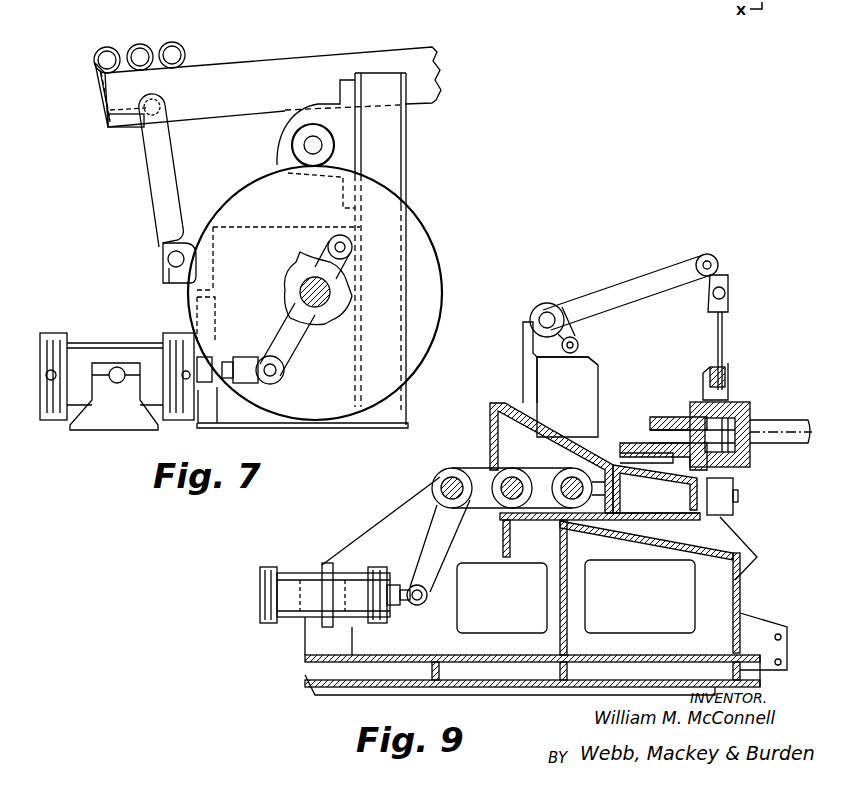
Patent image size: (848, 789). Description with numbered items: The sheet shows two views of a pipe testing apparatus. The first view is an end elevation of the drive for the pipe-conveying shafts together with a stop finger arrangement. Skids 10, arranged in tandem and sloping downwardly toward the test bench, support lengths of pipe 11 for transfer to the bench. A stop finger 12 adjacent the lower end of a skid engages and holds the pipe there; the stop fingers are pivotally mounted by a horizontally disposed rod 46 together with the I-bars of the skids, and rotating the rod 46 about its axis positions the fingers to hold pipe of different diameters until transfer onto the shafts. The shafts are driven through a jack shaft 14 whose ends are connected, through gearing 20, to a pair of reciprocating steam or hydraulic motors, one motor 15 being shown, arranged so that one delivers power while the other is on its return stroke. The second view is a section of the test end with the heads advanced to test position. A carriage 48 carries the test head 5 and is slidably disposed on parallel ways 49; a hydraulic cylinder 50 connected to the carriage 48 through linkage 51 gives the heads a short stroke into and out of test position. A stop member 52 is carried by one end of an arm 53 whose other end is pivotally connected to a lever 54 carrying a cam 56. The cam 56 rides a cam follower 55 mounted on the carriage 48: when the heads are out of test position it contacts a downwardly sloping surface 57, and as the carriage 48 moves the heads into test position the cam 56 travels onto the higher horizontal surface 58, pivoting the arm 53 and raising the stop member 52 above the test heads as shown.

In FIG. 9, the test head 5 is at (750, 410).
In FIG. 7, the skid 10 is at (441, 72).
In FIG. 7, the length of pipe 11 is at (118, 47).
In FIG. 9, the length of pipe 11 is at (805, 420).
In FIG. 7, the stop finger 12 is at (96, 67).
In FIG. 7, the jack shaft 14 is at (305, 145).
In FIG. 7, the motor 15 is at (108, 345).
In FIG. 7, the gearing 20 is at (436, 224).
In FIG. 7, the rod 46 is at (166, 259).
In FIG. 9, the carriage 48 is at (686, 505).
In FIG. 9, the ways 49 is at (740, 497).
In FIG. 9, the hydraulic cylinder 50 is at (297, 575).
In FIG. 9, the linkage 51 is at (482, 468).
In FIG. 9, the stop member 52 is at (727, 348).
In FIG. 9, the arm 53 is at (640, 283).
In FIG. 9, the lever 54 is at (555, 305).
In FIG. 9, the cam follower 55 is at (600, 400).
In FIG. 9, the cam 56 is at (583, 343).
In FIG. 9, the sloping surface 57 is at (598, 362).
In FIG. 9, the horizontal surface 58 is at (528, 352).